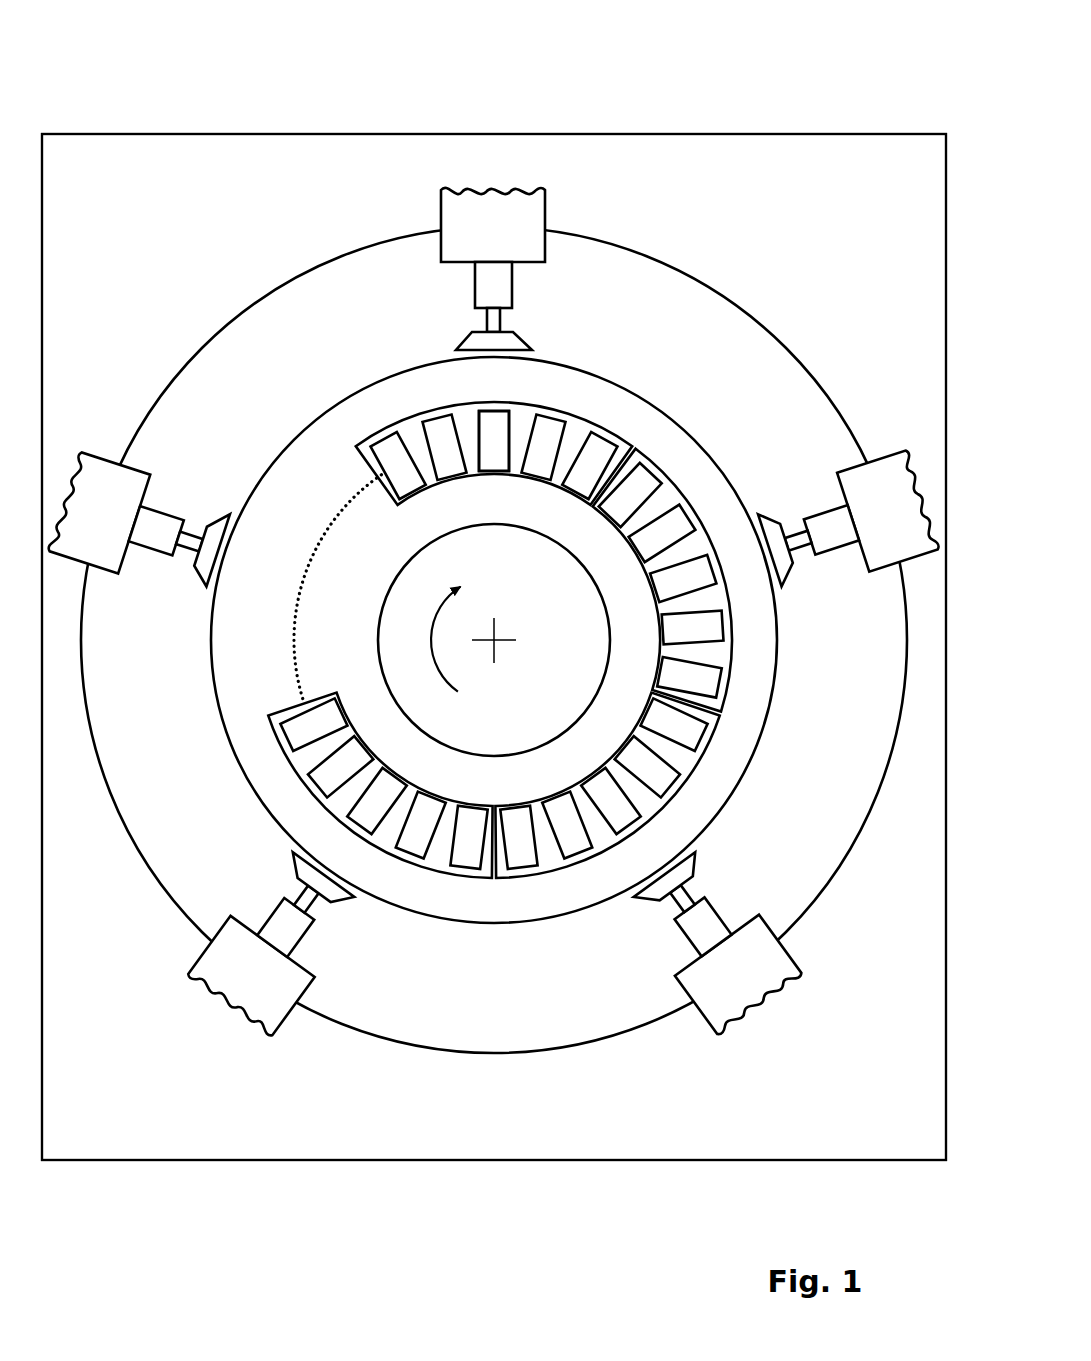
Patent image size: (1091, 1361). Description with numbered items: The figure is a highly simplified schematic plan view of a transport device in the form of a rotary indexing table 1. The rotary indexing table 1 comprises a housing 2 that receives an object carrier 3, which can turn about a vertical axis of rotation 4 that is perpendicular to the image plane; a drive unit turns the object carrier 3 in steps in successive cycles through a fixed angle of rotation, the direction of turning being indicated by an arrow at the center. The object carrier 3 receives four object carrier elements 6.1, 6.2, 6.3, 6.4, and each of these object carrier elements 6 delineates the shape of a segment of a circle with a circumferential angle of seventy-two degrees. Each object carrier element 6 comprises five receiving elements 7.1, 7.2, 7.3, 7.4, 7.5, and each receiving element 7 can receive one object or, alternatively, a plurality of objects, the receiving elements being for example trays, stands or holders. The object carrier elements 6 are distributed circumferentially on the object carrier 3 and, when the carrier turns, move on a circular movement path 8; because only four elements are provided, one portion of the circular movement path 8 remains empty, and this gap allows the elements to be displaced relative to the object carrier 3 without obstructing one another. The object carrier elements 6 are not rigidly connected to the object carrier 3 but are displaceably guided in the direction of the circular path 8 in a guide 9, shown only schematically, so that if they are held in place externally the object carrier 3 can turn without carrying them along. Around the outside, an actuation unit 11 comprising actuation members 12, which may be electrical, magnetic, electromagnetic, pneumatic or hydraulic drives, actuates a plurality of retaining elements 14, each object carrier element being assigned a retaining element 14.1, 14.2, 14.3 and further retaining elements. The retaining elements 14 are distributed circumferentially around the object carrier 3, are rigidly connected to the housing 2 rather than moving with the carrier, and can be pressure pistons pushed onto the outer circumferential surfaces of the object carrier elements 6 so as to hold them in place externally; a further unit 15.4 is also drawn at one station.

The rotary indexing table 1 is at (706, 90).
The housing 2 is at (292, 134).
The object carrier 3 is at (752, 368).
The vertical axis of rotation 4 is at (494, 642).
The object carrier elements 6 is at (523, 643).
The object carrier element 6.1 is at (433, 875).
The object carrier element 6.2 is at (700, 768).
The object carrier element 6.3 is at (707, 537).
The object carrier element 6.4 is at (511, 438).
The receiving elements 7 is at (492, 453).
The receiving element 7.1 is at (597, 452).
The receiving element 7.2 is at (540, 458).
The receiving element 7.3 is at (488, 425).
The receiving element 7.4 is at (441, 445).
The receiving element 7.5 is at (395, 465).
The circular movement path 8 is at (303, 573).
The guide 9 is at (380, 623).
The actuation unit 11 is at (432, 247).
The actuation members 12 is at (497, 288).
The retaining elements 14 is at (255, 840).
The retaining element 14.1 is at (458, 333).
The retaining element 14.2 is at (655, 918).
The retaining element 14.3 is at (797, 577).
The measuring unit 15.4 is at (100, 485).